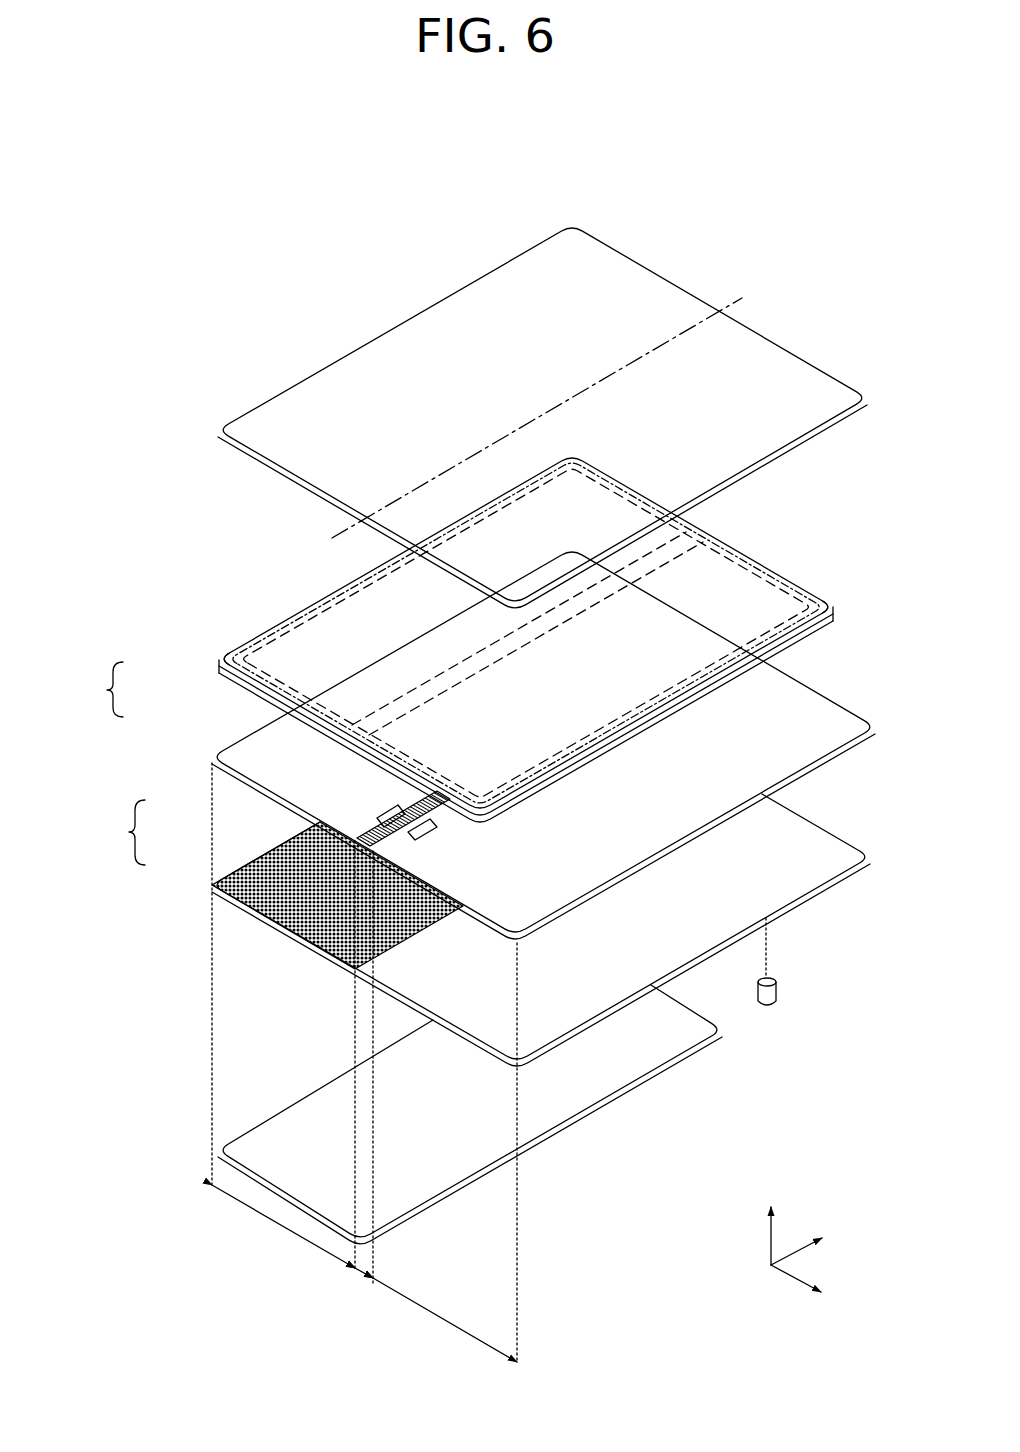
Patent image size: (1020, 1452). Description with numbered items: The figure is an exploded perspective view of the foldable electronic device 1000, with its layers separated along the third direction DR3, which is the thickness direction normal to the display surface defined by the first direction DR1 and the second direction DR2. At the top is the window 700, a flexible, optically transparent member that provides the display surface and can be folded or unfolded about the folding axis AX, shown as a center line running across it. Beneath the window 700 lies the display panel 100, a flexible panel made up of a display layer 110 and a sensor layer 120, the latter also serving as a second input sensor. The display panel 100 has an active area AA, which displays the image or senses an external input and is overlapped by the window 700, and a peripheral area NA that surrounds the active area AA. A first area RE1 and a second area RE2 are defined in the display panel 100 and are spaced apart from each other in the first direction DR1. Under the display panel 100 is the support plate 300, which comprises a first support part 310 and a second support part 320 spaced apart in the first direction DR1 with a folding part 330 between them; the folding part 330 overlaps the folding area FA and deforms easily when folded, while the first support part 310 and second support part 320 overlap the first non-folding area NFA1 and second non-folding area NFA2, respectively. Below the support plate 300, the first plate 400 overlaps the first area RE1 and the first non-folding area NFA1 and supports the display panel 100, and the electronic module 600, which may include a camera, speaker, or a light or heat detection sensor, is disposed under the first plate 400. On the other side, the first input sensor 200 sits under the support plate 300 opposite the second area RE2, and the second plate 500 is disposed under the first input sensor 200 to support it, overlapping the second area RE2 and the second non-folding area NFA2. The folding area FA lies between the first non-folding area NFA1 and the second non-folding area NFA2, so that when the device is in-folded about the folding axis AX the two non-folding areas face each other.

The electronic device 1000 is at (755, 231).
The window 700 is at (218, 432).
The folding axis AX is at (520, 425).
The display panel 100 is at (462, 652).
The sensor layer 120 is at (219, 660).
The display layer 110 is at (230, 683).
The peripheral area NA is at (737, 557).
The active area AA is at (763, 594).
The first area RE1 is at (800, 585).
The second area RE2 is at (278, 628).
The support plate 300 is at (480, 745).
The second support part 320 is at (282, 808).
The folding part 330 is at (357, 857).
The first support part 310 is at (380, 886).
The first input sensor 200 is at (213, 890).
The first plate 400 is at (820, 843).
The electronic module 600 is at (767, 1008).
The second plate 500 is at (300, 1120).
The first non-folding area NFA1 is at (445, 1152).
The second non-folding area NFA2 is at (283, 1015).
The folding area FA is at (521, 917).
The first direction DR1 is at (820, 1290).
The second direction DR2 is at (820, 1241).
The third direction DR3 is at (772, 1222).